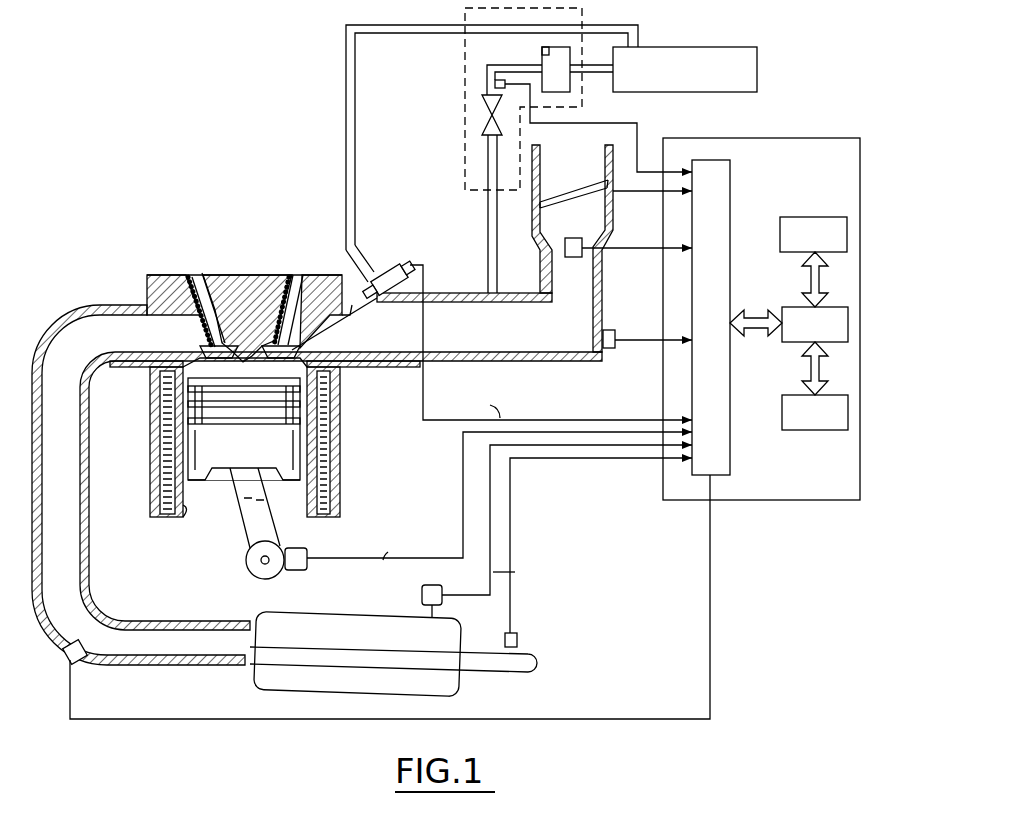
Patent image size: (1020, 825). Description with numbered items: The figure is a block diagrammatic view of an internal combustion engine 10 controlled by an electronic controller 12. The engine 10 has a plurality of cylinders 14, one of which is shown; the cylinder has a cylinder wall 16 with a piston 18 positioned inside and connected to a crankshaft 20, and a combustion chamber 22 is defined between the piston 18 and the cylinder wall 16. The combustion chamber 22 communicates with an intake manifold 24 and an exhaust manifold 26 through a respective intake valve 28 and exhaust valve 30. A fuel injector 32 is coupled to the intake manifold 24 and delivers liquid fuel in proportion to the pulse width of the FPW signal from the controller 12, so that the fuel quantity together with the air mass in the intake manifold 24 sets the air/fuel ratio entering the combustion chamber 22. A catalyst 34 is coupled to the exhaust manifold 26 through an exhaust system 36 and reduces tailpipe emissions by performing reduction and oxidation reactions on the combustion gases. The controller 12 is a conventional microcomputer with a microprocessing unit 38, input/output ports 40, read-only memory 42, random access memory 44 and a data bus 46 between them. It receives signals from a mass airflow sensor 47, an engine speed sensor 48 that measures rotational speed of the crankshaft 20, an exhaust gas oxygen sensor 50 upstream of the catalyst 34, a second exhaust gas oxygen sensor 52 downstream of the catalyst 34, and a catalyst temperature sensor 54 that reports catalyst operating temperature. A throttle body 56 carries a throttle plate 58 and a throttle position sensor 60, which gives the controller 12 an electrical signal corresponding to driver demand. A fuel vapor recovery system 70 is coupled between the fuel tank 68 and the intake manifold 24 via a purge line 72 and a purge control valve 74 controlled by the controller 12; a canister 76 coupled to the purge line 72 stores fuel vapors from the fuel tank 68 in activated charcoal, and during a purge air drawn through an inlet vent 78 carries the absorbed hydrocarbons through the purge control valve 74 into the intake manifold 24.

The internal combustion engine 10 is at (192, 178).
The electronic controller 12 is at (755, 161).
The cylinder 14 is at (222, 540).
The cylinder wall 16 is at (188, 515).
The piston 18 is at (233, 462).
The crankshaft 20 is at (252, 572).
The combustion chamber 22 is at (240, 360).
The intake manifold 24 is at (505, 334).
The exhaust manifold 26 is at (86, 335).
The intake valve 28 is at (300, 350).
The exhaust valve 30 is at (205, 346).
The fuel injector 32 is at (383, 270).
The catalyst 34 is at (352, 620).
The exhaust system 36 is at (52, 650).
The microprocessing unit (CPU) 38 is at (795, 306).
The input/output ports 40 is at (708, 160).
The read-only memory 42 is at (806, 217).
The random access memory 44 is at (806, 432).
The data bus 46 is at (756, 330).
The mass airflow sensor 47 is at (573, 238).
The engine speed sensor 48 is at (306, 570).
The exhaust gas oxygen sensor 50 is at (96, 618).
The second exhaust gas oxygen sensor 52 is at (520, 638).
The catalyst temperature sensor 54 is at (443, 590).
The throttle body 56 is at (572, 148).
The throttle plate 58 is at (540, 232).
The throttle position sensor 60 is at (529, 219).
The fuel tank 68 is at (758, 56).
The fuel vapor recovery system 70 is at (465, 151).
The purge line 72 is at (487, 176).
The purge control valve 74 is at (484, 118).
The canister 76 is at (563, 47).
The inlet vent 78 is at (542, 50).